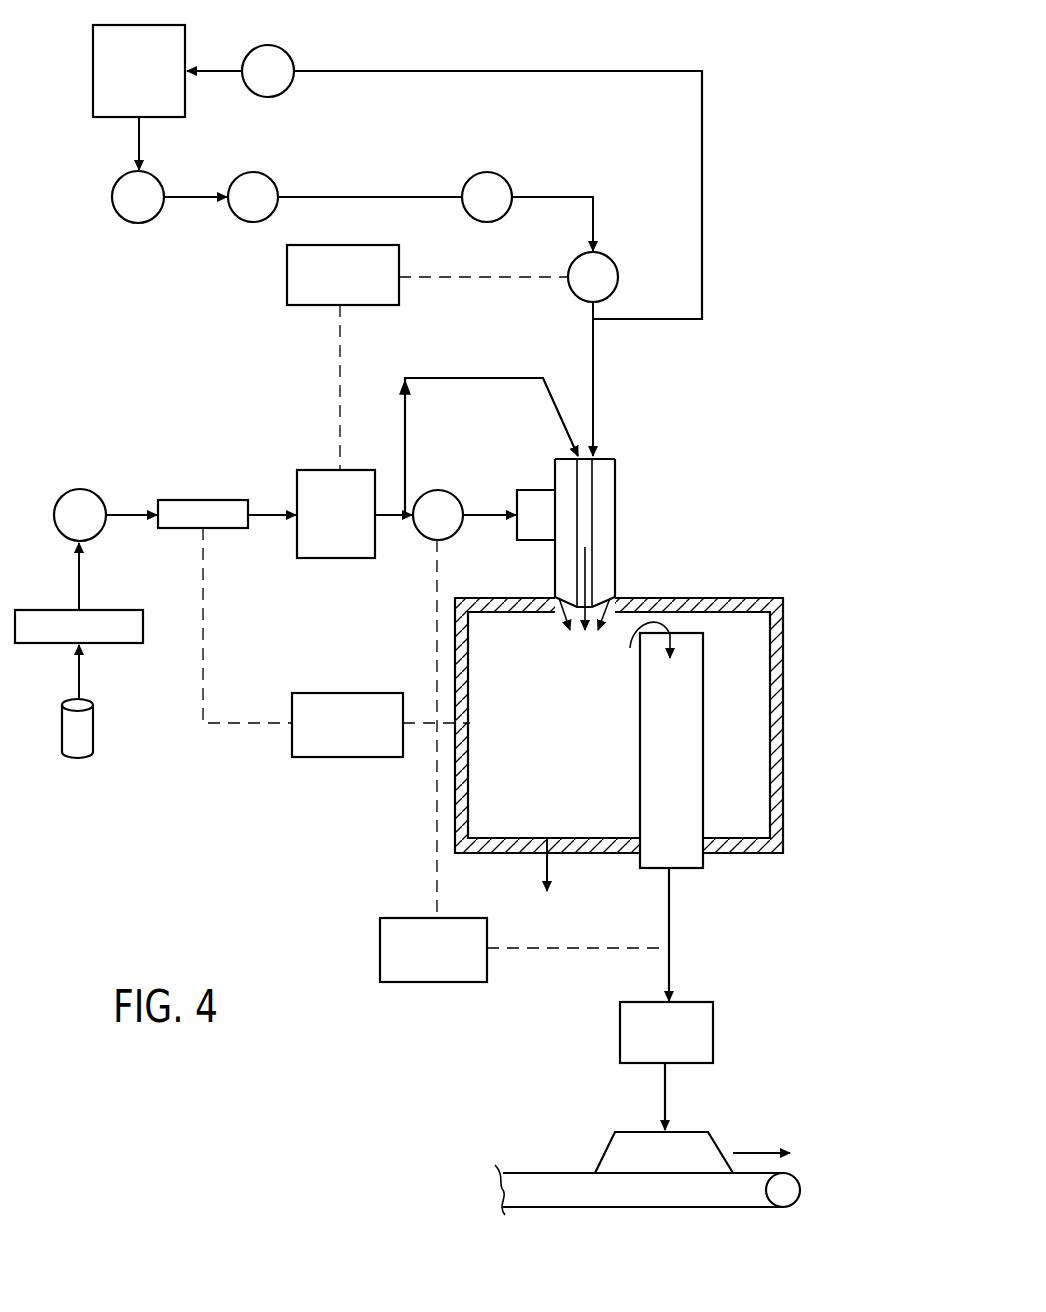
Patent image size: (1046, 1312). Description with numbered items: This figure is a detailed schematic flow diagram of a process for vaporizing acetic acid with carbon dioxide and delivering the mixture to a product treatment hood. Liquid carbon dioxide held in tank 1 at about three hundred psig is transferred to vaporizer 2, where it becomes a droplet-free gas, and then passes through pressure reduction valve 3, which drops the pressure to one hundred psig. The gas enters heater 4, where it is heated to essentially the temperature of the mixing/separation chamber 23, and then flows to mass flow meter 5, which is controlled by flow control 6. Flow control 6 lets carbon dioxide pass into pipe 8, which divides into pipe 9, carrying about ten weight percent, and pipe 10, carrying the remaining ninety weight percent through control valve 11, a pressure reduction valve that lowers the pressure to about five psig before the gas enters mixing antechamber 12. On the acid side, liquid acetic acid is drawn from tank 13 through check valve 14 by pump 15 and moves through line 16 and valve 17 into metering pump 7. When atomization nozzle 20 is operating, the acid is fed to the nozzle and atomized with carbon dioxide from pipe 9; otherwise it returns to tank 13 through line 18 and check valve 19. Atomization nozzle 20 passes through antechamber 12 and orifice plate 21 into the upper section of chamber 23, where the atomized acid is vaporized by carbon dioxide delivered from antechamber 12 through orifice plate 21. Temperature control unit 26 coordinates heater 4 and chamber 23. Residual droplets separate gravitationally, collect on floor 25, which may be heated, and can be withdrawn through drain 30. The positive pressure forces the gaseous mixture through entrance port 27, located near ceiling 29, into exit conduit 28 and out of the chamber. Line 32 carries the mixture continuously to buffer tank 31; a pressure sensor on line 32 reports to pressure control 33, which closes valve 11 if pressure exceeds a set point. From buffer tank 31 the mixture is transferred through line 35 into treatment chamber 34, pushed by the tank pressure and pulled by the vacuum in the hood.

The tank 1 is at (80, 748).
The vaporizer 2 is at (125, 643).
The pressure reduction valve 3 is at (62, 510).
The heater 4 is at (193, 500).
The mass flow meter 5 is at (308, 483).
The flow control 6 is at (298, 265).
The metering pump 7 is at (618, 282).
The pipe 8 is at (385, 520).
The pipe 9 is at (405, 450).
The pipe 10 is at (487, 505).
The control valve 11 is at (440, 492).
The mixing antechamber 12 is at (617, 500).
The tank 13 is at (93, 70).
The check valve 14 is at (125, 207).
The pump 15 is at (262, 185).
The line 16 is at (370, 197).
The valve 17 is at (492, 185).
The line 18 is at (702, 197).
The check valve 19 is at (273, 50).
The atomization nozzle 20 is at (590, 483).
The orifice plate 21 is at (557, 614).
The mixing/separation chamber 23 is at (783, 795).
The floor 25 is at (722, 834).
The temperature control unit 26 is at (335, 757).
The entrance port 27 is at (693, 630).
The exit conduit 28 is at (683, 755).
The ceiling 29 is at (508, 613).
The drain 30 is at (550, 862).
The buffer tank 31 is at (700, 1050).
The line 32 is at (669, 960).
The pressure control 33 is at (380, 932).
The treatment chamber 34 is at (710, 1130).
The line 35 is at (665, 1090).